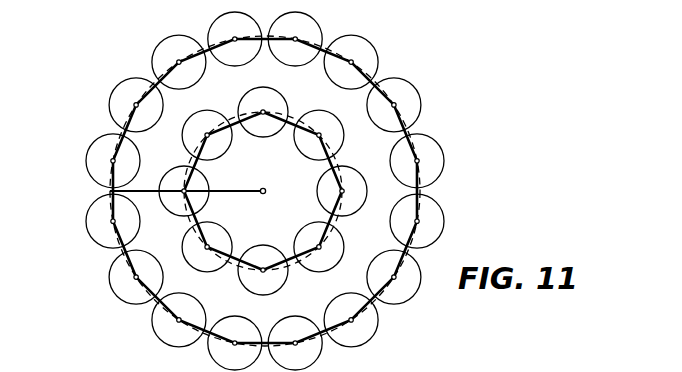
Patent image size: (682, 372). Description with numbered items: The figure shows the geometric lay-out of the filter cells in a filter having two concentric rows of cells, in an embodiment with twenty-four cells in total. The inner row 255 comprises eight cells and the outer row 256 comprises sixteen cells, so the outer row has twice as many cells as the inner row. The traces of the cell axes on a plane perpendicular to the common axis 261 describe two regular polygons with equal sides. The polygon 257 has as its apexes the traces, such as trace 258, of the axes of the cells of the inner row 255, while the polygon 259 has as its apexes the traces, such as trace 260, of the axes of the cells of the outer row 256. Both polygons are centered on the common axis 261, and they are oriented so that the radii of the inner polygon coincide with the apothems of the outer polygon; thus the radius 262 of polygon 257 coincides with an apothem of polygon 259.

The inner row 255 is at (241, 158).
The outer row 256 is at (86, 128).
The polygon 257 is at (293, 120).
The trace 258 is at (207, 250).
The polygon 259 is at (380, 80).
The trace 260 is at (130, 276).
The common axis 261 is at (265, 194).
The radius 262 is at (234, 192).